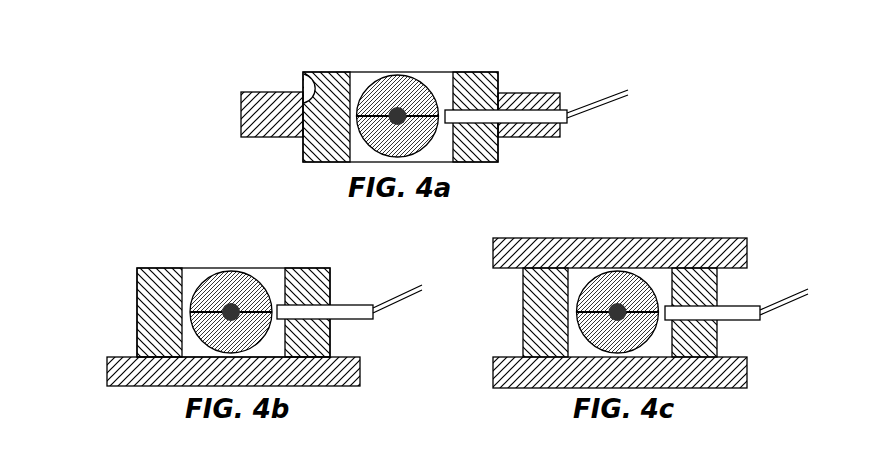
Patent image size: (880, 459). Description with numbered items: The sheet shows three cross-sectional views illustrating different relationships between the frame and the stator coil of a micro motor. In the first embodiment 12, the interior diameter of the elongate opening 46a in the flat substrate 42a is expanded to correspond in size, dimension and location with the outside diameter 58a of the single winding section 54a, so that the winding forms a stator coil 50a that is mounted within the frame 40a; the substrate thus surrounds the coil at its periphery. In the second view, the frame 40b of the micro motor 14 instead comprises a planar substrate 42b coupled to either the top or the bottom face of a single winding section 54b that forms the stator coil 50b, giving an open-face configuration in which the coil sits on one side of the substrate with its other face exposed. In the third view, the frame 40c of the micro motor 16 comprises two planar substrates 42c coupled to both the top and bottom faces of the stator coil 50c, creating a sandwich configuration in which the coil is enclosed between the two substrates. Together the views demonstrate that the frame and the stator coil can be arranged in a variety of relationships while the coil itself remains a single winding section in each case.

In FIG. 4a, the micro motor embodiment 12 is at (228, 72).
In FIG. 4b, the micro motor 14 is at (112, 242).
In FIG. 4c, the micro motor 16 is at (729, 207).
In FIG. 4a, the frame 40a is at (210, 117).
In FIG. 4b, the frame 40b is at (92, 375).
In FIG. 4c, the frame 40c is at (466, 380).
In FIG. 4a, the flat substrate 42a is at (257, 127).
In FIG. 4b, the planar substrate 42b is at (128, 374).
In FIG. 4c, the planar substrates 42c is at (587, 249).
In FIG. 4a, the elongate opening 46a is at (307, 93).
In FIG. 4a, the stator coil 50a is at (472, 72).
In FIG. 4b, the stator coil 50b is at (295, 268).
In FIG. 4c, the stator coil 50c is at (521, 305).
In FIG. 4a, the single winding section 54a is at (342, 82).
In FIG. 4b, the single winding section 54b is at (165, 277).
In FIG. 4a, the outside diameter 58a is at (499, 144).